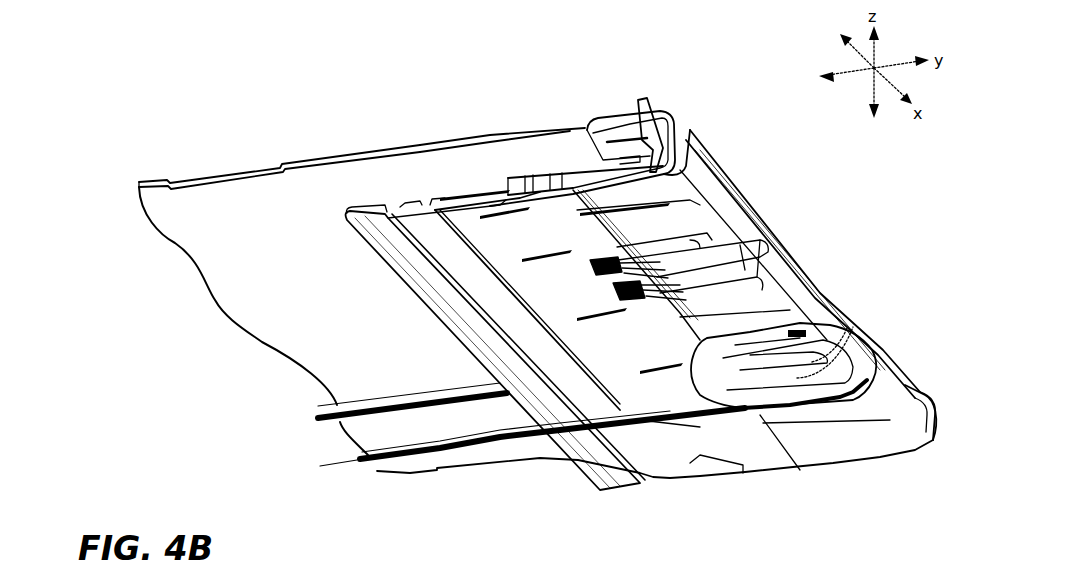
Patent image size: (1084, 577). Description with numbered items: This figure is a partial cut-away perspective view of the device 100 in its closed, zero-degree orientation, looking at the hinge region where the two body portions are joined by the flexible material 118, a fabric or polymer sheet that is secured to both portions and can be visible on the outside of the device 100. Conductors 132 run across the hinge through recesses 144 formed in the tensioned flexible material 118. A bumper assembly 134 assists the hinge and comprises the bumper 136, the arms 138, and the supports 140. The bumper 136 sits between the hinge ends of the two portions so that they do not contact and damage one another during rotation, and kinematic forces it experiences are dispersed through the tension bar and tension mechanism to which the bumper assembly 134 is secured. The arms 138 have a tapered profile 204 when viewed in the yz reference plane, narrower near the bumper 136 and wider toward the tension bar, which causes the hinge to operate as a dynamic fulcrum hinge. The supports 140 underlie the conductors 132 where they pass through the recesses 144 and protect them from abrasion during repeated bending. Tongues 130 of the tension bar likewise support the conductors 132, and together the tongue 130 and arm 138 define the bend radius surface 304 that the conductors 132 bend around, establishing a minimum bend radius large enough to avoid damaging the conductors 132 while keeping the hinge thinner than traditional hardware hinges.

The device 100 is at (198, 57).
The flexible material 118 is at (295, 362).
The tongues 130 is at (612, 262).
The conductors 132 is at (357, 455).
The bumper assembly 134 is at (530, 168).
The bumper 136 is at (643, 96).
The arms 138 is at (822, 508).
The supports 140 is at (857, 333).
The recesses 144 is at (603, 273).
The tapered profile 204 is at (935, 487).
The bend radius surface 304 is at (832, 307).